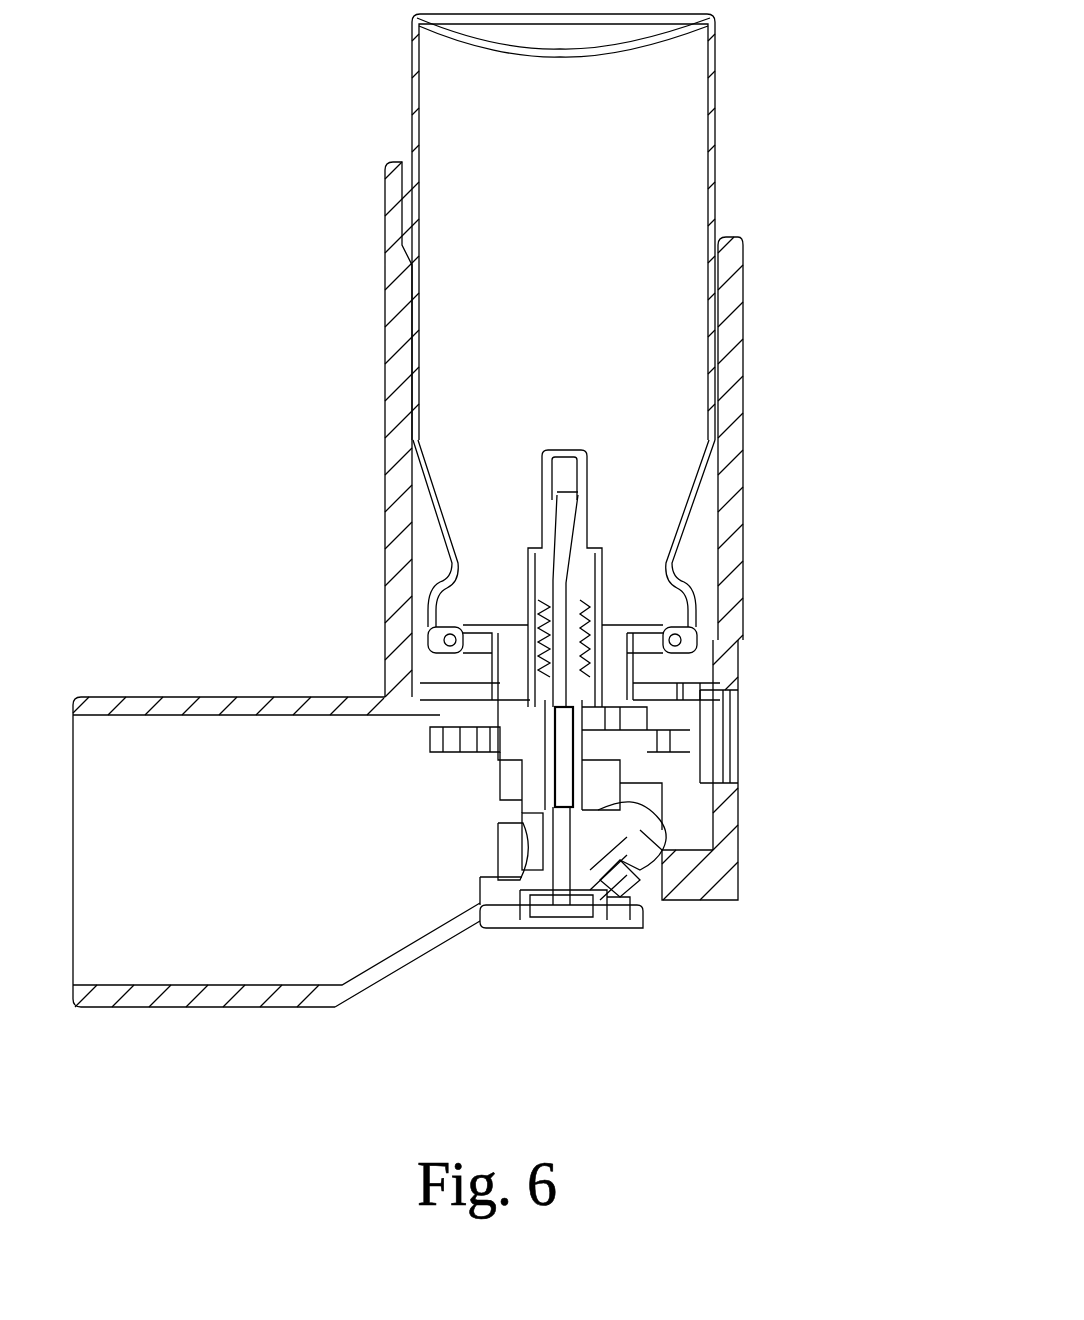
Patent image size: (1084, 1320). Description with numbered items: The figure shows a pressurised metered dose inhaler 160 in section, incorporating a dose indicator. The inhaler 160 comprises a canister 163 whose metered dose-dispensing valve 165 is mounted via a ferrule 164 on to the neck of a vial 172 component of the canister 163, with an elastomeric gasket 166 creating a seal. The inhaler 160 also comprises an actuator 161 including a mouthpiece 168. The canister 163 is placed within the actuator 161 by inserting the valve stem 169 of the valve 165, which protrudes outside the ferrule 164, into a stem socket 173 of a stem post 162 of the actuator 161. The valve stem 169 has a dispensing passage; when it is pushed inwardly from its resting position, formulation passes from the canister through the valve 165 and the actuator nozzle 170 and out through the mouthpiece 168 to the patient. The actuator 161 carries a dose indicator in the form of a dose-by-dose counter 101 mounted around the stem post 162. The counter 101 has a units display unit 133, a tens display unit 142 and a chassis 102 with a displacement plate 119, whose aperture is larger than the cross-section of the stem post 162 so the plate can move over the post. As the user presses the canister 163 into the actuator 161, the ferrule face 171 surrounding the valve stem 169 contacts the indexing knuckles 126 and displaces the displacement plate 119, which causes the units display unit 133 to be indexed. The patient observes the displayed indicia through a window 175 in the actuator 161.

The pressurised metered dose inhaler 160 is at (325, 100).
The canister 163 is at (716, 72).
The actuator 161 is at (398, 335).
The ferrule 164 is at (698, 587).
The metered dose-dispensing valve 165 is at (537, 550).
The vial 172 is at (453, 567).
The ferrule face 171 is at (500, 712).
The chassis 102 is at (515, 724).
The displacement plate 119 is at (509, 735).
The indexing knuckles 126 is at (535, 723).
The valve stem 169 is at (533, 790).
The elastomeric gasket 166 is at (682, 640).
The tens display unit 142 is at (690, 730).
The window 175 is at (727, 752).
The dose-by-dose counter 101 is at (700, 827).
The units display unit 133 is at (670, 863).
The actuator nozzle 170 is at (559, 812).
The stem post 162 is at (593, 840).
The stem socket 173 is at (533, 792).
The mouthpiece 168 is at (207, 995).